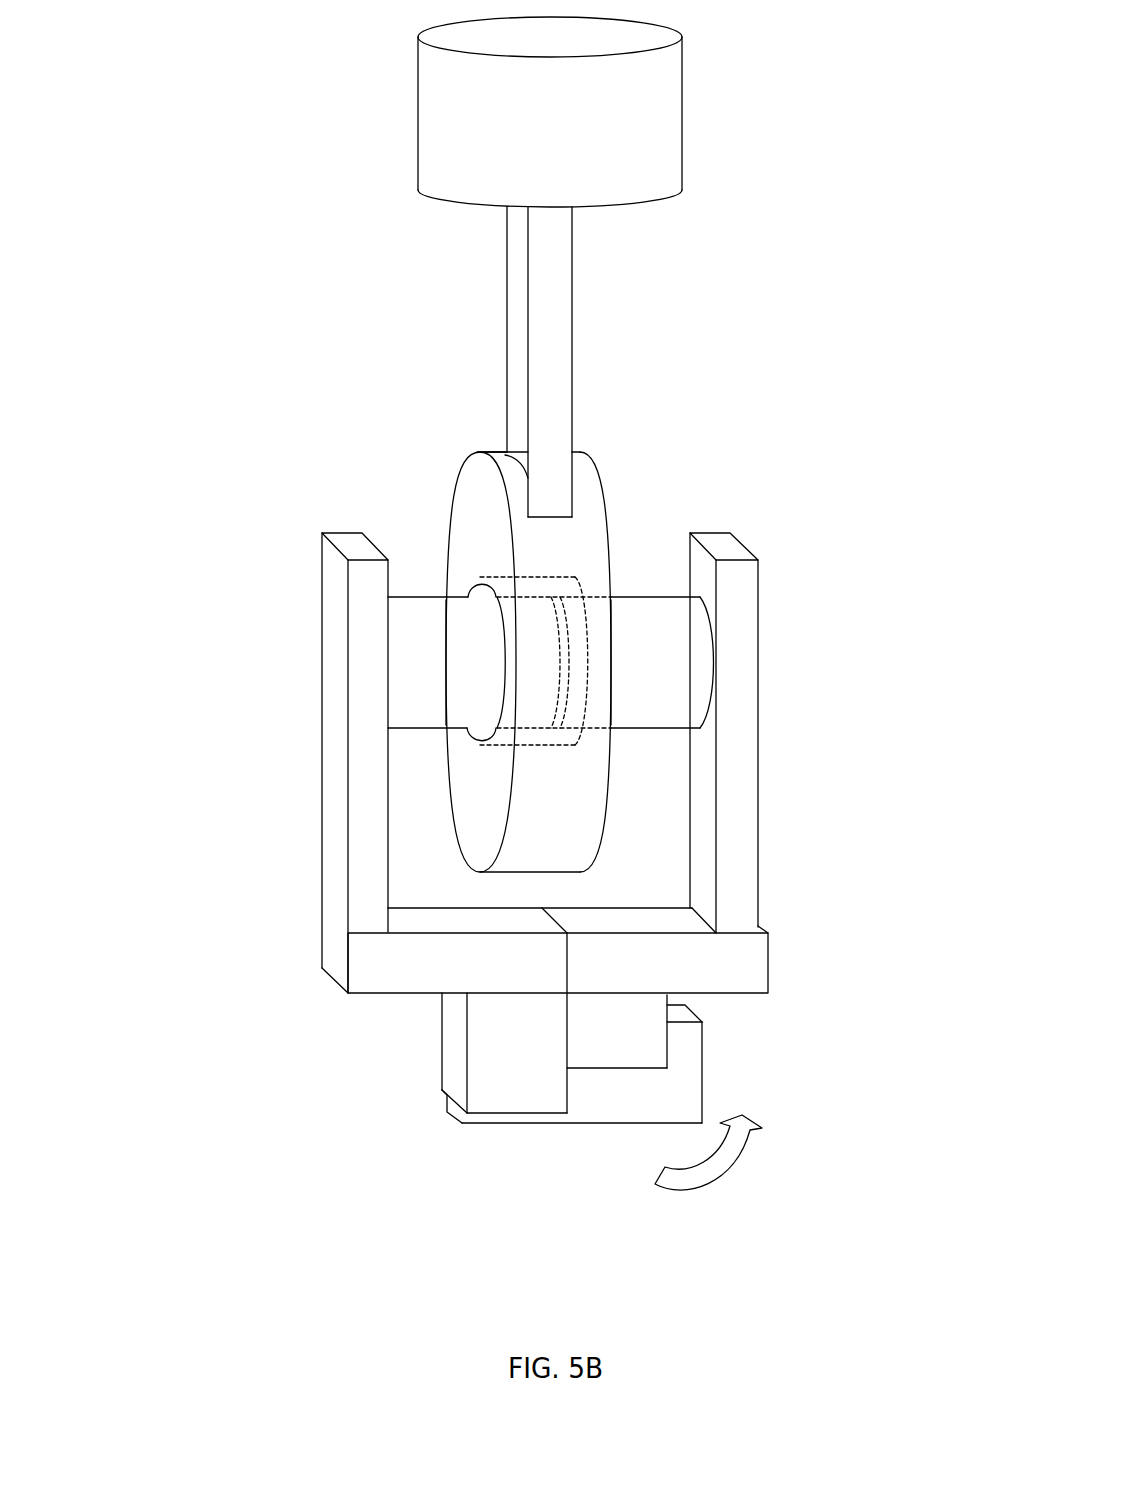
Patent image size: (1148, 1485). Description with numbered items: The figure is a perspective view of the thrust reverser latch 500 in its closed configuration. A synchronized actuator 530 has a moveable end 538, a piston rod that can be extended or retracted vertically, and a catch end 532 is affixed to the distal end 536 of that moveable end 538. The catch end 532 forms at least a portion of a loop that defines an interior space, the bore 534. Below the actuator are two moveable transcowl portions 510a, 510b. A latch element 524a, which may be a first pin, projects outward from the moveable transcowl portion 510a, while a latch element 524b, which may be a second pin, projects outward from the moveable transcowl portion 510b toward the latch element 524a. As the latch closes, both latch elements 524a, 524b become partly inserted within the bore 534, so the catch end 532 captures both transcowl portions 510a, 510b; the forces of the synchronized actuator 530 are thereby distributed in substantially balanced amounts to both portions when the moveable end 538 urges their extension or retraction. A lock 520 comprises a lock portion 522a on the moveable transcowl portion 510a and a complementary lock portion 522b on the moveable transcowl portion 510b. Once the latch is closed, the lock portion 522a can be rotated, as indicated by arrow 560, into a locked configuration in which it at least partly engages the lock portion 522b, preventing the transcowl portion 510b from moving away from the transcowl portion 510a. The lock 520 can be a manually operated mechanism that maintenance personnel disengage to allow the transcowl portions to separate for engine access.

The thrust reverser latch 500 is at (109, 367).
The synchronized actuator 530 is at (683, 127).
The moveable end 538 is at (572, 327).
The catch end 532 is at (602, 502).
The distal end 536 is at (495, 437).
The bore 534 is at (484, 646).
The latch element 524a is at (427, 597).
The latch element 524b is at (635, 597).
The moveable transcowl portion 510a is at (322, 790).
The moveable transcowl portion 510b is at (758, 818).
The lock 520 is at (305, 910).
The lock portion 522a is at (702, 1042).
The lock portion 522b is at (667, 1057).
The arrow 560 is at (727, 1182).